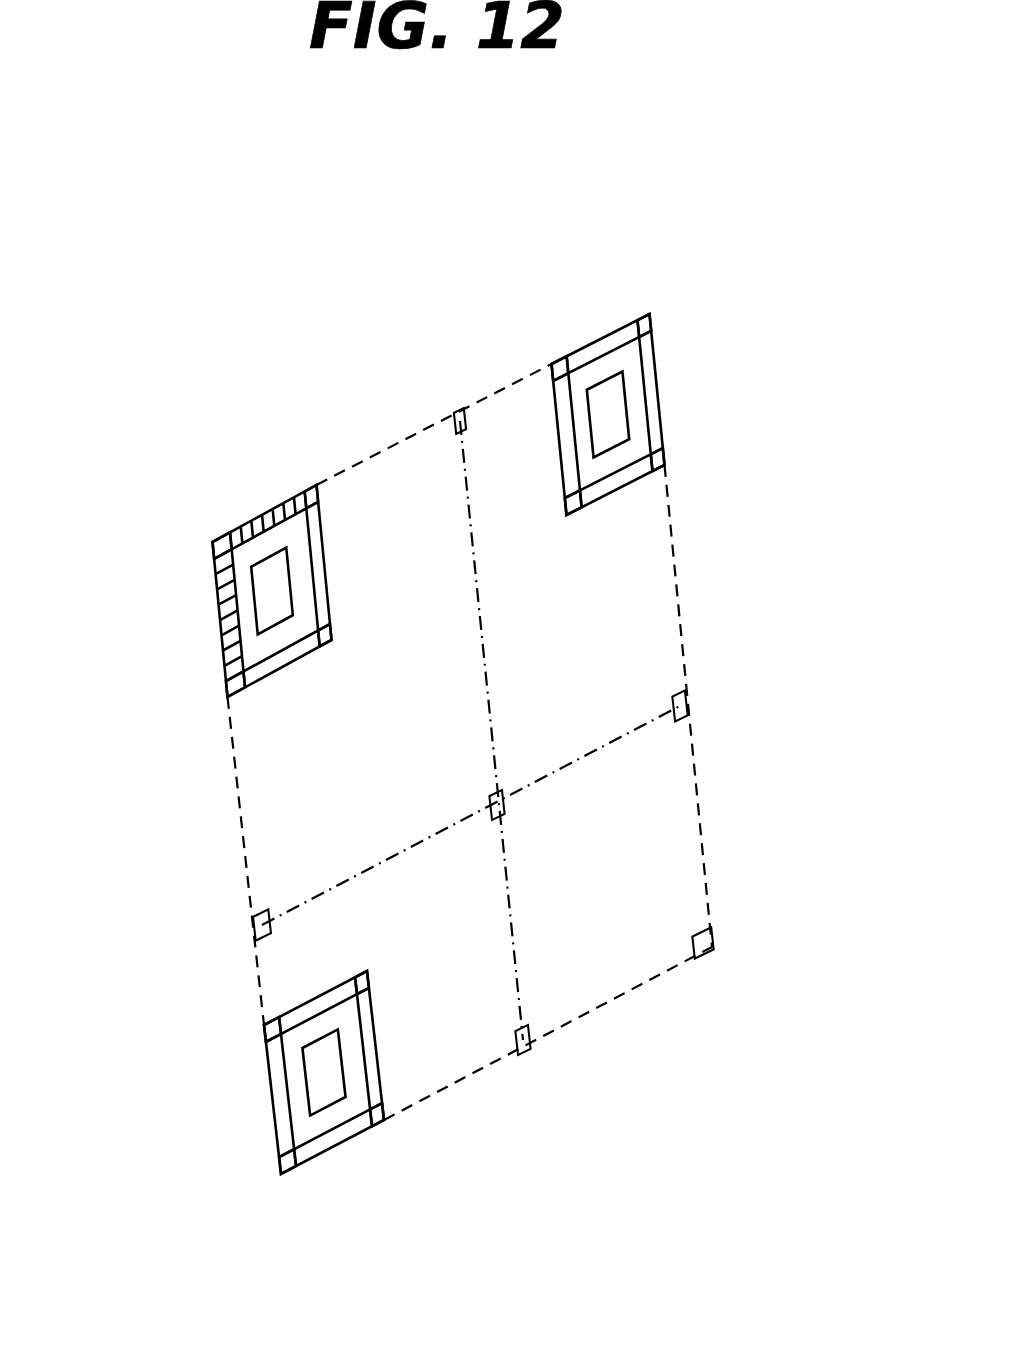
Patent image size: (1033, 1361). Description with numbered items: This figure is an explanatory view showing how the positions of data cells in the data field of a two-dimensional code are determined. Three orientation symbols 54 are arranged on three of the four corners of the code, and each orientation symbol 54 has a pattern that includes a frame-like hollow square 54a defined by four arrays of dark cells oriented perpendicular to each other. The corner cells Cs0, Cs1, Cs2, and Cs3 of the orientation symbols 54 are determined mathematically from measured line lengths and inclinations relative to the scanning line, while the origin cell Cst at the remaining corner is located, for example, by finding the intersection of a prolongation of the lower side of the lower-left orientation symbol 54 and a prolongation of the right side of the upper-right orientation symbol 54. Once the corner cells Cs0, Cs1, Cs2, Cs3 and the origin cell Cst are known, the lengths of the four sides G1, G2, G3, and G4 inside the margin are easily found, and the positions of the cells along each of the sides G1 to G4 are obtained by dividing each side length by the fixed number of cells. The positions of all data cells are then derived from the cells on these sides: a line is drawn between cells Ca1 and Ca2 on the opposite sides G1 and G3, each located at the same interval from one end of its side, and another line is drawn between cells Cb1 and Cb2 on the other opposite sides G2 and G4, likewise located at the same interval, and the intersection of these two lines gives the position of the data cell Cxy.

The orientation symbol 54 is at (357, 556).
The frame-like hollow square 54a is at (263, 514).
The corner cell Cs0 is at (214, 543).
The corner cell Cs1 is at (228, 692).
The corner cell Cs2 is at (325, 636).
The corner cell Cs3 is at (310, 488).
The cell on side G1 Ca1 is at (460, 411).
The cell on side G3 Ca2 is at (521, 1053).
The cell on side G2 Cb1 is at (252, 930).
The cell on side G4 Cb2 is at (690, 714).
The data cell Cxy is at (509, 808).
The origin cell Cst is at (714, 935).
The side of the two-dimensional code G1 is at (425, 430).
The side of the two-dimensional code G2 is at (240, 850).
The side of the two-dimensional code G3 is at (587, 1017).
The side of the two-dimensional code G4 is at (687, 668).